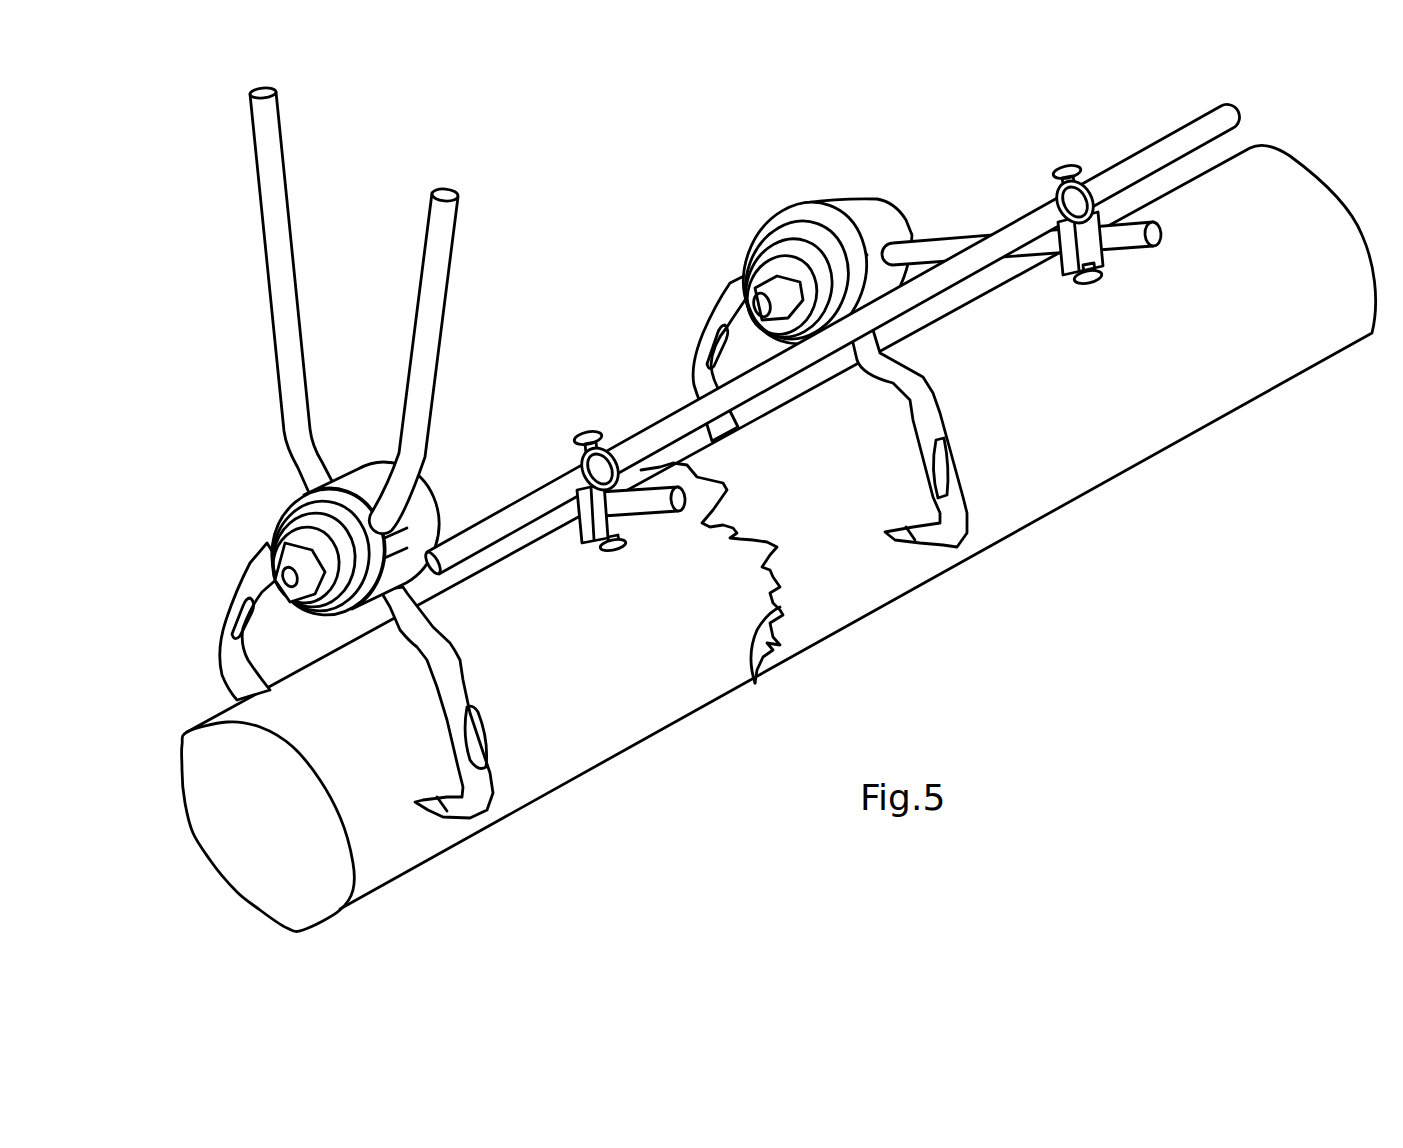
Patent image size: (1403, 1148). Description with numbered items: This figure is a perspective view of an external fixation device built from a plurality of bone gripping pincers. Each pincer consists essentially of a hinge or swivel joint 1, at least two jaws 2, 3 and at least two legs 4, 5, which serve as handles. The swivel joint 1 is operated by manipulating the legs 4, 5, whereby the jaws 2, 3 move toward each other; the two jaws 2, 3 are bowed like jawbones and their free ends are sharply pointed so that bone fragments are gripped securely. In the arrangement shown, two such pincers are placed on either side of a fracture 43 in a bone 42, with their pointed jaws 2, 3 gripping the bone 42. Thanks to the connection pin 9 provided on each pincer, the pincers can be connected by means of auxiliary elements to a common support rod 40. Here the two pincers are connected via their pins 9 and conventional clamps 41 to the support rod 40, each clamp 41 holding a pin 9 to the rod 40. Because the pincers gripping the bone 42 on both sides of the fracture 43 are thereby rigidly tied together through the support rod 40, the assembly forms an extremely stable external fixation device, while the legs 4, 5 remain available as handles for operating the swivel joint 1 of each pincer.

The swivel joint 1 is at (351, 488).
The jaw 2 is at (220, 645).
The jaw 3 is at (465, 677).
The leg 4 is at (262, 208).
The leg 5 is at (447, 281).
The connection pin 9 is at (1160, 224).
The support rod 40 is at (1182, 130).
The clamp 41 is at (1085, 178).
The bone 42 is at (1153, 427).
The fracture 43 is at (750, 682).